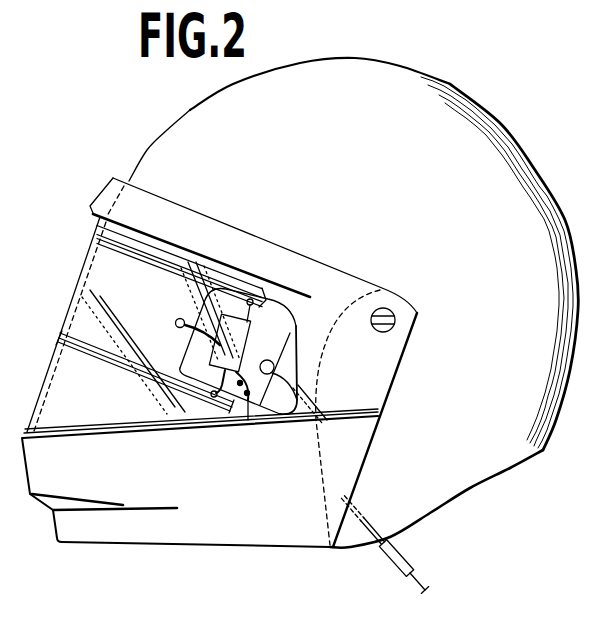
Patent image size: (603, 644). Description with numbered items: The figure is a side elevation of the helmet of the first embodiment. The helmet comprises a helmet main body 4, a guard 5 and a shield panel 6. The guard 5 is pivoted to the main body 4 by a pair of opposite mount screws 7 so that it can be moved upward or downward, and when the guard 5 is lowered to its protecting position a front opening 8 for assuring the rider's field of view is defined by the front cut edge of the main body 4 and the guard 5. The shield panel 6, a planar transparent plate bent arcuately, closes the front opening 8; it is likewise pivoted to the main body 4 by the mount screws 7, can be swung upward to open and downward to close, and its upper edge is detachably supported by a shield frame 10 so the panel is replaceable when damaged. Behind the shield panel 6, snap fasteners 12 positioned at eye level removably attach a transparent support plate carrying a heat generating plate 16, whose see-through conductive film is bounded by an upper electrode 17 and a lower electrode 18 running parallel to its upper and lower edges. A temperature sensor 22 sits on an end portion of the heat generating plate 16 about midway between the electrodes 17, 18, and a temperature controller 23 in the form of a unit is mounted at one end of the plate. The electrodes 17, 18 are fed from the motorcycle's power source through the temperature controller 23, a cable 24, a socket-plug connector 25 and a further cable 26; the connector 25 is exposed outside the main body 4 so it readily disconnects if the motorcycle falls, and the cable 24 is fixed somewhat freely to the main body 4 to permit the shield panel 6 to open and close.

The helmet main body 4 is at (187, 123).
The guard 5 is at (131, 530).
The shield panel 6 is at (62, 360).
The mount screws 7 is at (383, 332).
The front opening 8 is at (44, 417).
The shield frame 10 is at (228, 226).
The snap fasteners 12 is at (292, 404).
The heat generating plate 16 is at (138, 373).
The upper electrode 17 is at (146, 266).
The lower electrode 18 is at (77, 330).
The temperature sensor 22 is at (175, 323).
The temperature controller 23 is at (243, 337).
The cable 24 is at (248, 420).
The socket-plug connector 25 is at (394, 565).
The cable 26 is at (422, 581).